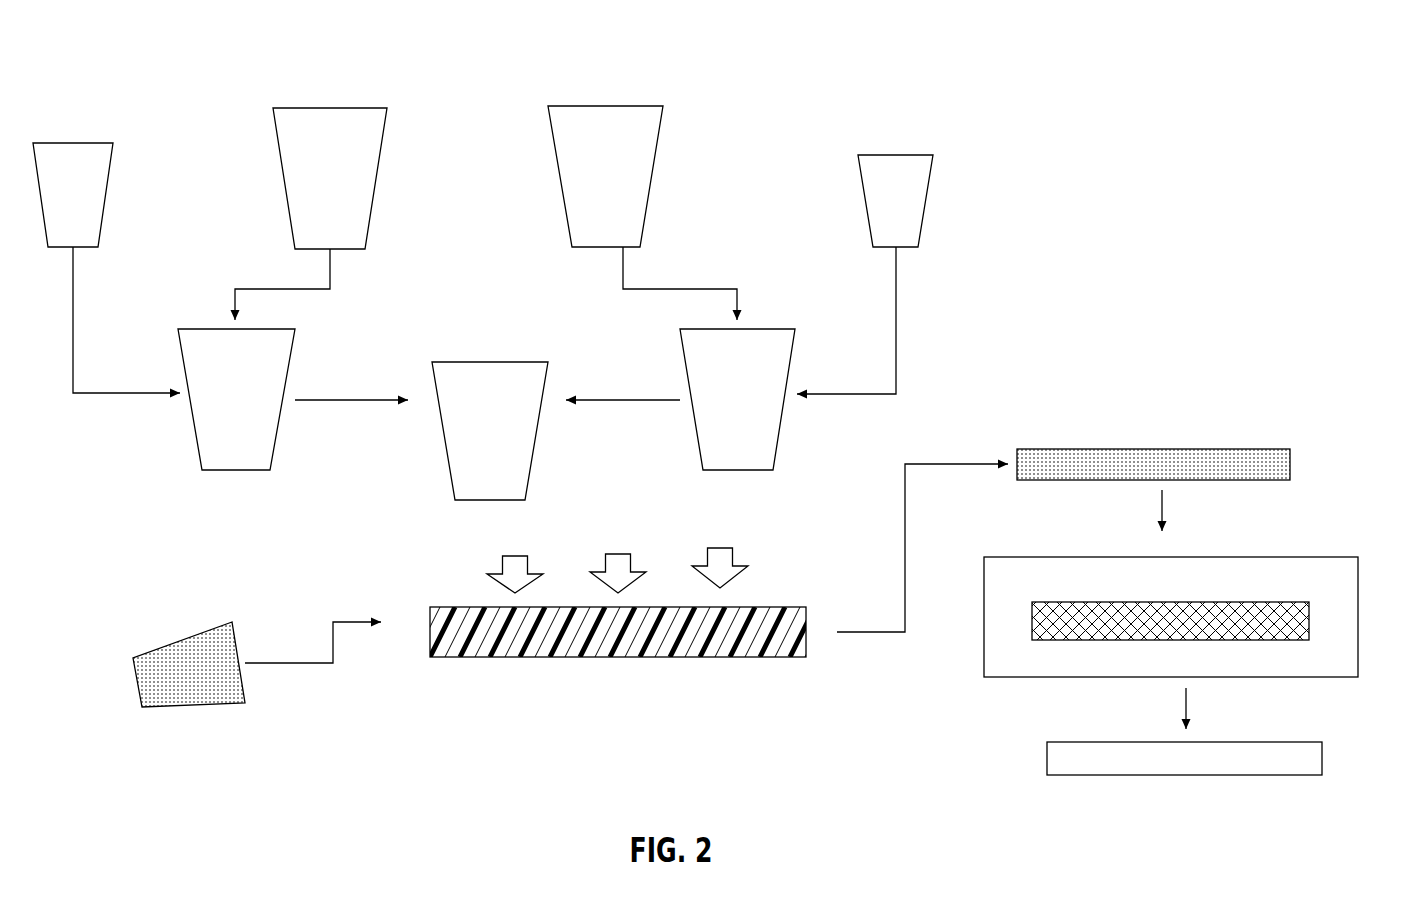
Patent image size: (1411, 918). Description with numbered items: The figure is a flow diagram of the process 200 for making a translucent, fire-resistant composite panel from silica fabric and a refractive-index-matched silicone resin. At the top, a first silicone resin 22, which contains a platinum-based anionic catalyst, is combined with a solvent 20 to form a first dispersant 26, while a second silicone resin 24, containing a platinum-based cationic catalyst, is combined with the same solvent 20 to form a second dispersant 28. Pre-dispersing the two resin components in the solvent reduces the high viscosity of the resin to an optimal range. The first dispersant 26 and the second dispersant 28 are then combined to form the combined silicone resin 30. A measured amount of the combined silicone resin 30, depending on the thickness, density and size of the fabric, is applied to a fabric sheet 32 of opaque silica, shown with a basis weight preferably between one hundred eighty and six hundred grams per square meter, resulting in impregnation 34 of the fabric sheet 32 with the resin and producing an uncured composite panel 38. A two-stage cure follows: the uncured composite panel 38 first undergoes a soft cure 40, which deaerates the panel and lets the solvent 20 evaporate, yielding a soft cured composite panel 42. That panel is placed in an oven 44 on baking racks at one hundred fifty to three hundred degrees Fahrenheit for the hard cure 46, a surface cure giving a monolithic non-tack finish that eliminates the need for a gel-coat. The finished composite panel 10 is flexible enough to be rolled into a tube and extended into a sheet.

The process 200 is at (328, 31).
The solvent 20 is at (86, 199).
The first silicone resin 22 is at (344, 176).
The second silicone resin 24 is at (620, 181).
The first dispersant 26 is at (252, 412).
The second dispersant 28 is at (751, 401).
The combined silicone resin 30 is at (503, 444).
The fabric sheet 32 is at (495, 658).
The impregnation 34 is at (433, 571).
The uncured composite panel 38 is at (1110, 448).
The soft cure 40 is at (1135, 529).
The soft cured composite panel 42 is at (1310, 621).
The oven 44 is at (983, 652).
The hard cure 46 is at (1240, 720).
The composite panel 10 is at (1047, 752).